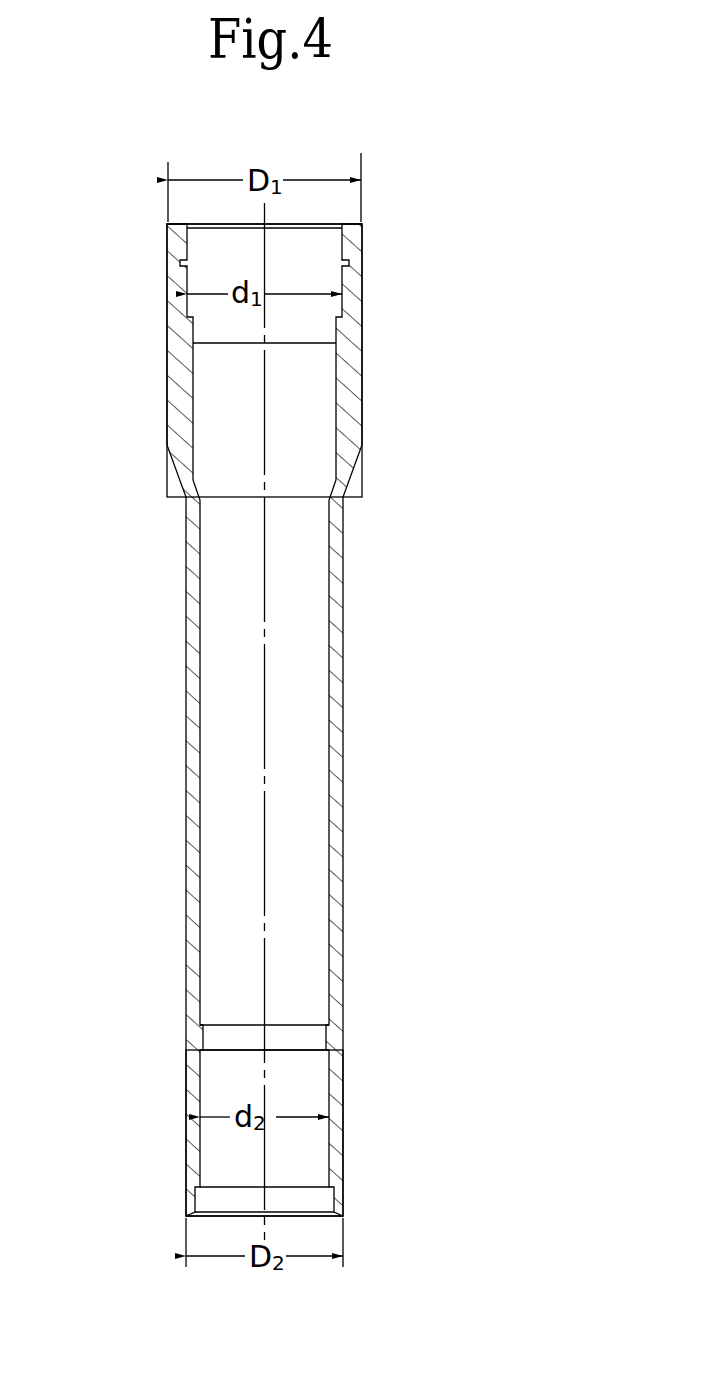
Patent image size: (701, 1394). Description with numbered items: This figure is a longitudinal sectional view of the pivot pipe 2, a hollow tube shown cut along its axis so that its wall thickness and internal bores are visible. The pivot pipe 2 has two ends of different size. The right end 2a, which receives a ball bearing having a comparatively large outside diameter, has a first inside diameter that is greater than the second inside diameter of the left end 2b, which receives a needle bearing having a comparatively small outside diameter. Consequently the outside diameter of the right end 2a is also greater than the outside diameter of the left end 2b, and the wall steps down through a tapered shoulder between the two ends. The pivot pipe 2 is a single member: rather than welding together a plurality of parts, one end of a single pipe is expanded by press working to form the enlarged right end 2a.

The pivot pipe 2 is at (186, 818).
The right end of the pivot pipe 2a is at (158, 342).
The left end of the pivot pipe 2b is at (180, 1112).